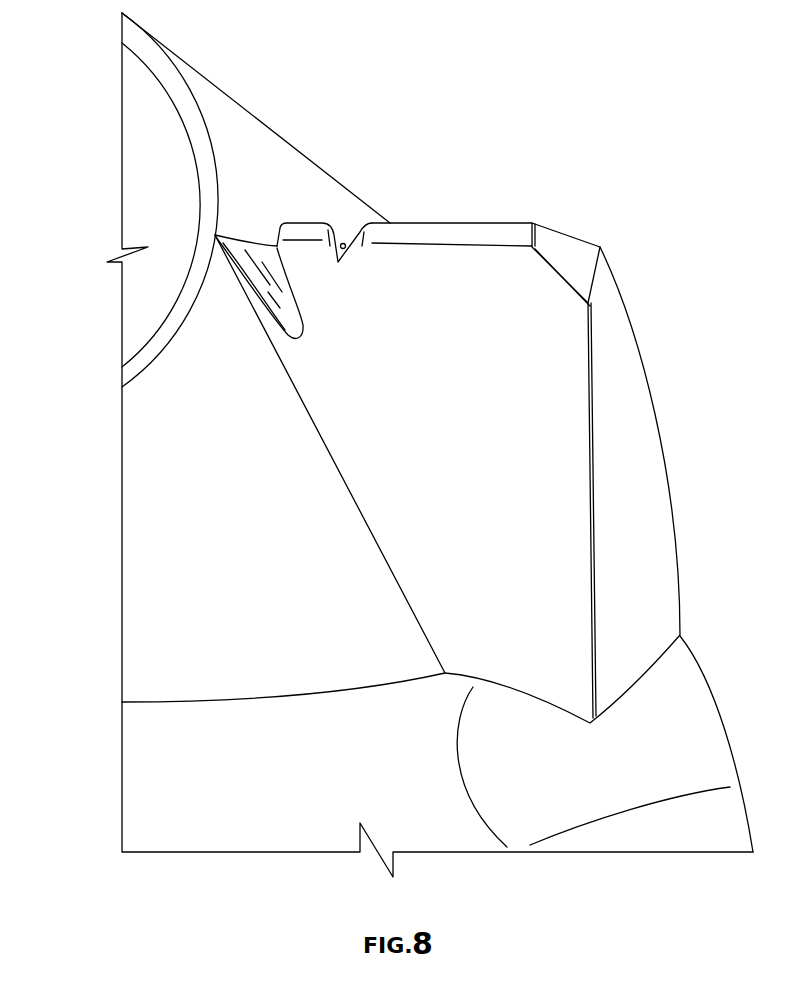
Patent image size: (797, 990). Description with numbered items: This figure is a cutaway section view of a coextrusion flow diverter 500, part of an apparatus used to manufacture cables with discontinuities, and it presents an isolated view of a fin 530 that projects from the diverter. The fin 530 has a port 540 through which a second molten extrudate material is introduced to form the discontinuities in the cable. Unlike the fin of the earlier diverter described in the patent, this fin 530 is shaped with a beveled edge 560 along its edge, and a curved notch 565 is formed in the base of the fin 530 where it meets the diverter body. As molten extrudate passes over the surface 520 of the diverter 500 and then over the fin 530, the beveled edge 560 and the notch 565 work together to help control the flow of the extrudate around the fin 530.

The coextrusion flow diverter 500 is at (85, 437).
The surface of the diverter 520 is at (150, 570).
The fin 530 is at (565, 418).
The port 540 is at (344, 243).
The beveled edge 560 is at (566, 222).
The curved notch 565 is at (252, 227).